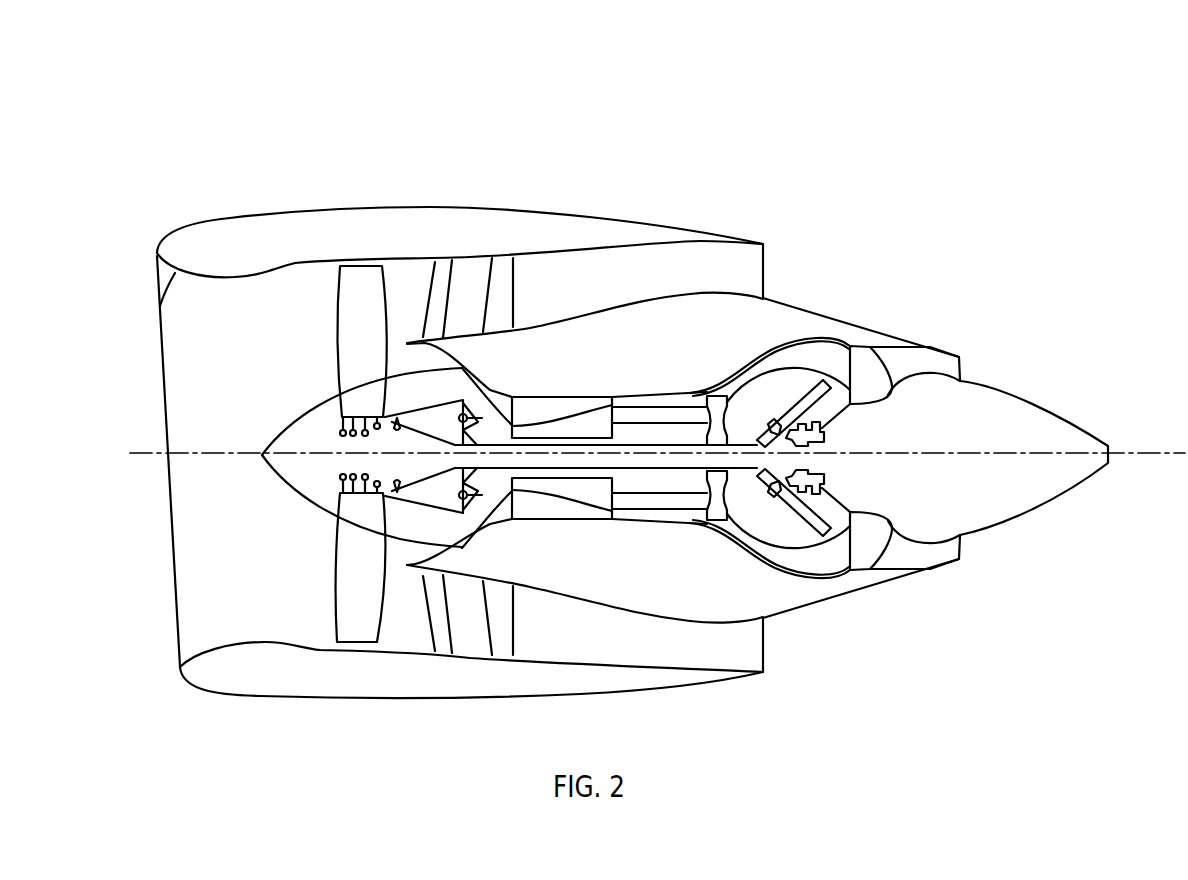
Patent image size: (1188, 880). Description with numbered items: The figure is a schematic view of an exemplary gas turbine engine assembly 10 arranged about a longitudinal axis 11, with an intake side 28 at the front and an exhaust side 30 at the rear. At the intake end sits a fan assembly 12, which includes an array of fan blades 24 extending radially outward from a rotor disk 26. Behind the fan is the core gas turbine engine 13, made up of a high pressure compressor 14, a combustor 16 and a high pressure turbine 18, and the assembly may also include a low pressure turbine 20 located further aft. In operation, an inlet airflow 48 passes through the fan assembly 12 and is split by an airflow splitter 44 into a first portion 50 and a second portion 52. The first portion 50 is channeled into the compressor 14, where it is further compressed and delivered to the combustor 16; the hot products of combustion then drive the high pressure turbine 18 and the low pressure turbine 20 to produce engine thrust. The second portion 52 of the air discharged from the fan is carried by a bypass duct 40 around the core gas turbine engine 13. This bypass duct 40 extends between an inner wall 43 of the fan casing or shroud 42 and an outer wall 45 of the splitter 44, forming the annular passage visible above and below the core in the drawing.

The gas turbine engine assembly 10 is at (636, 410).
The longitudinal axis 11 is at (193, 453).
The fan assembly 12 is at (509, 454).
The core gas turbine engine 13 is at (870, 330).
The high pressure compressor 14 is at (518, 407).
The combustor 16 is at (676, 407).
The high pressure turbine 18 is at (713, 520).
The low pressure turbine 20 is at (802, 357).
The fan blades 24 is at (347, 320).
The rotor disk 26 is at (352, 508).
The intake side 28 is at (425, 433).
The exhaust side 30 is at (704, 417).
The bypass duct 40 is at (603, 299).
The fan casing or shroud 42 is at (578, 208).
The inner wall 43 is at (640, 247).
The airflow splitter 44 is at (527, 590).
The outer wall 45 is at (807, 310).
The inlet airflow 48 is at (212, 580).
The first portion 50 is at (417, 357).
The second portion 52 is at (418, 320).